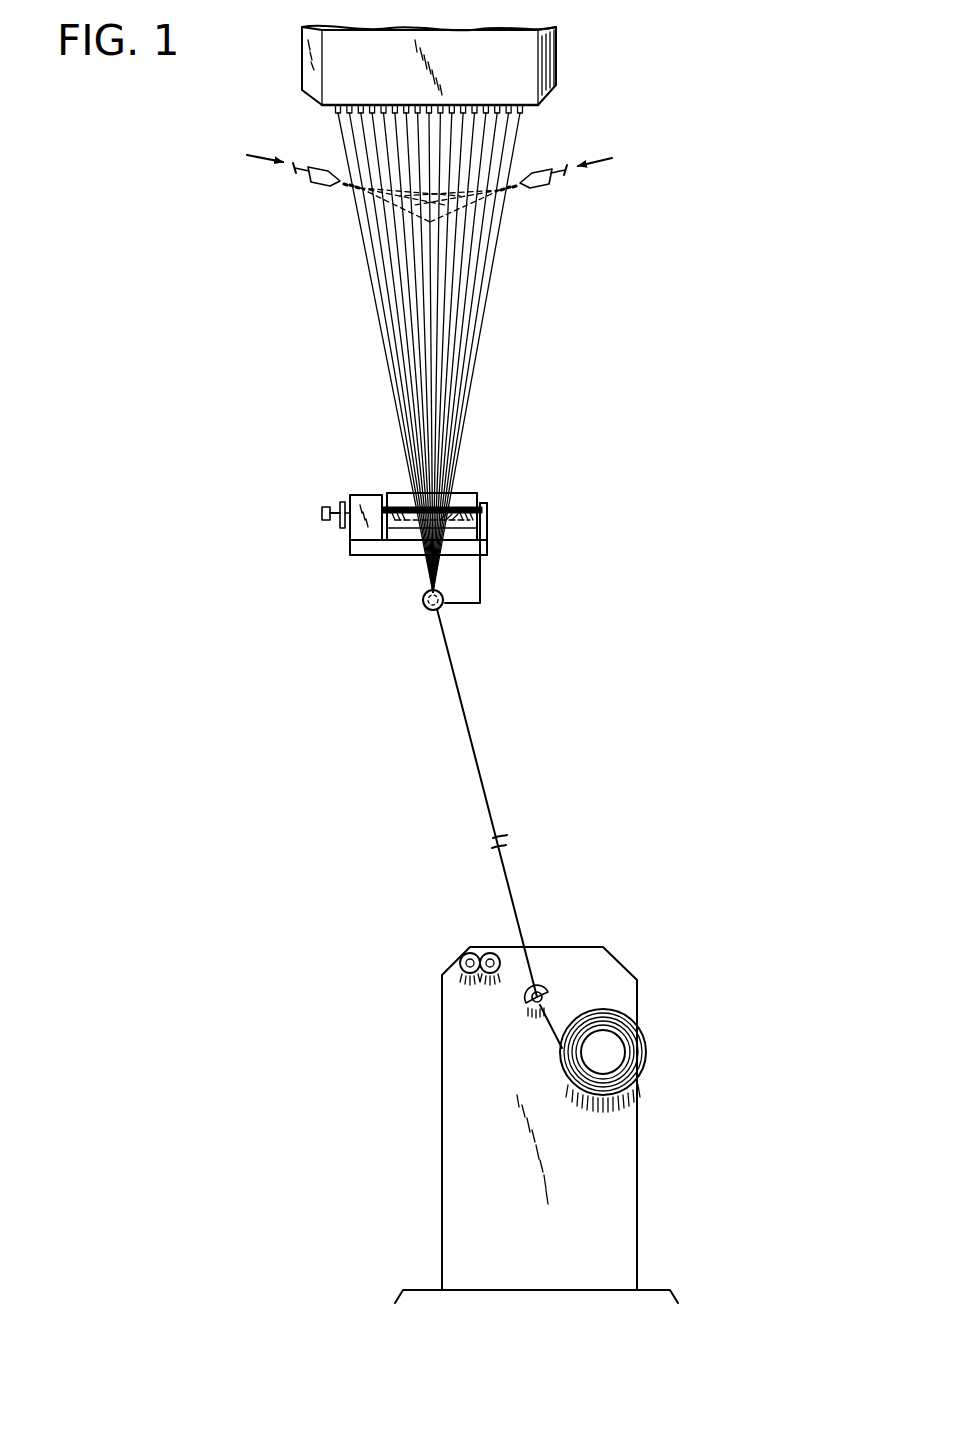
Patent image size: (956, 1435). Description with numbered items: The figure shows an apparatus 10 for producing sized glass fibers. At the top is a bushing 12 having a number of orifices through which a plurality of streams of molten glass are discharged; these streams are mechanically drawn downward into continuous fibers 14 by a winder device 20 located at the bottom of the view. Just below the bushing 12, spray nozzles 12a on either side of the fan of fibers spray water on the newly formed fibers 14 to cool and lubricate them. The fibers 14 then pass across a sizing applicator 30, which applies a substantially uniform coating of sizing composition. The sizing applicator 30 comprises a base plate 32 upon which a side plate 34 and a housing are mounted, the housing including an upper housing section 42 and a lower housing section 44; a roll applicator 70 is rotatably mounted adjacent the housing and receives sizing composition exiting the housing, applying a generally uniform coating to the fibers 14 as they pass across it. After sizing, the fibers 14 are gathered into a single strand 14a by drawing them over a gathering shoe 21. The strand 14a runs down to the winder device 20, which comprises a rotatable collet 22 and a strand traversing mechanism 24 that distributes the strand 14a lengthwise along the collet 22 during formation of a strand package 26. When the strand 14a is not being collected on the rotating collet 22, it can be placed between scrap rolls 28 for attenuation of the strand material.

The apparatus 10 is at (652, 128).
The bushing 12 is at (520, 59).
The spray nozzles 12a is at (322, 172).
The continuous fibers 14 is at (470, 290).
The strand 14a is at (480, 775).
The winder device 20 is at (570, 1088).
The gathering shoe 21 is at (448, 607).
The rotatable collet 22 is at (620, 1060).
The strand traversing mechanism 24 is at (523, 1023).
The strand package 26 is at (640, 1050).
The scrap rolls 28 is at (490, 952).
The sizing applicator 30 is at (486, 511).
The base plate 32 is at (478, 548).
The side plate 34 is at (487, 515).
The upper housing section 42 is at (455, 500).
The lower housing section 44 is at (403, 532).
The roll applicator 70 is at (468, 503).